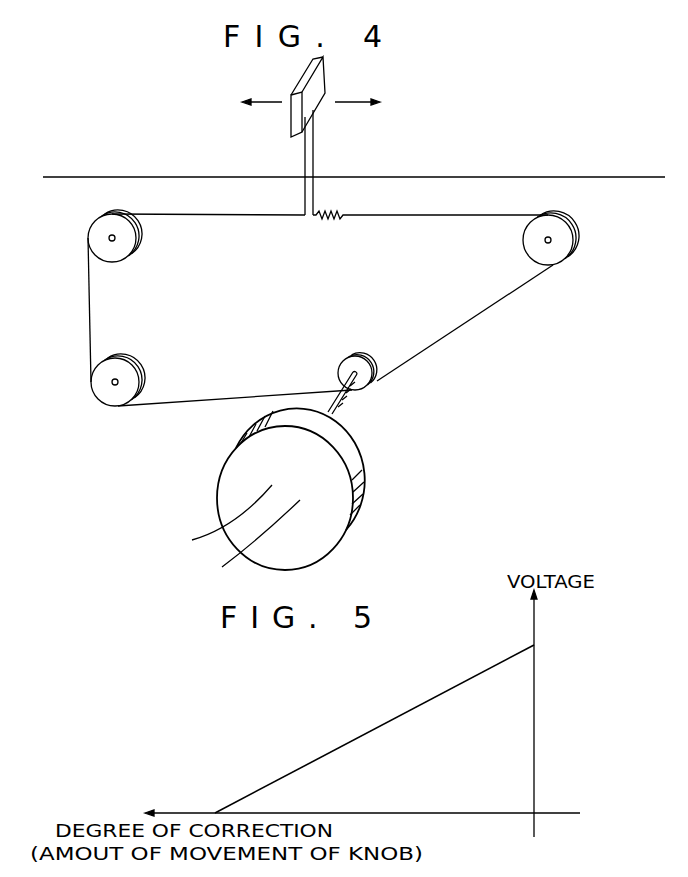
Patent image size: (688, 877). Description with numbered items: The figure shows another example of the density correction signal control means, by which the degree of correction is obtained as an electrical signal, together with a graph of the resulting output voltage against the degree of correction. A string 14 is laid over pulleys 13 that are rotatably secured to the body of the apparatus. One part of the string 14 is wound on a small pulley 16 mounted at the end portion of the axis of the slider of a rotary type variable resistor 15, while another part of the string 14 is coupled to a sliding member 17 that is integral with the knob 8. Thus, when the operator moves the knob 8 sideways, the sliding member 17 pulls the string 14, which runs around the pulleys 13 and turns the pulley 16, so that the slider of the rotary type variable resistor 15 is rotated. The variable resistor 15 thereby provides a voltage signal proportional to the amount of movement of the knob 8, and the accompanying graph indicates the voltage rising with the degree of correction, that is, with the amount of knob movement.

The knob 8 is at (321, 76).
The sliding member 17 is at (316, 142).
The pulleys 13 is at (125, 250).
The string 14 is at (467, 324).
The pulley 16 is at (347, 367).
The rotary type variable resistor 15 is at (350, 448).